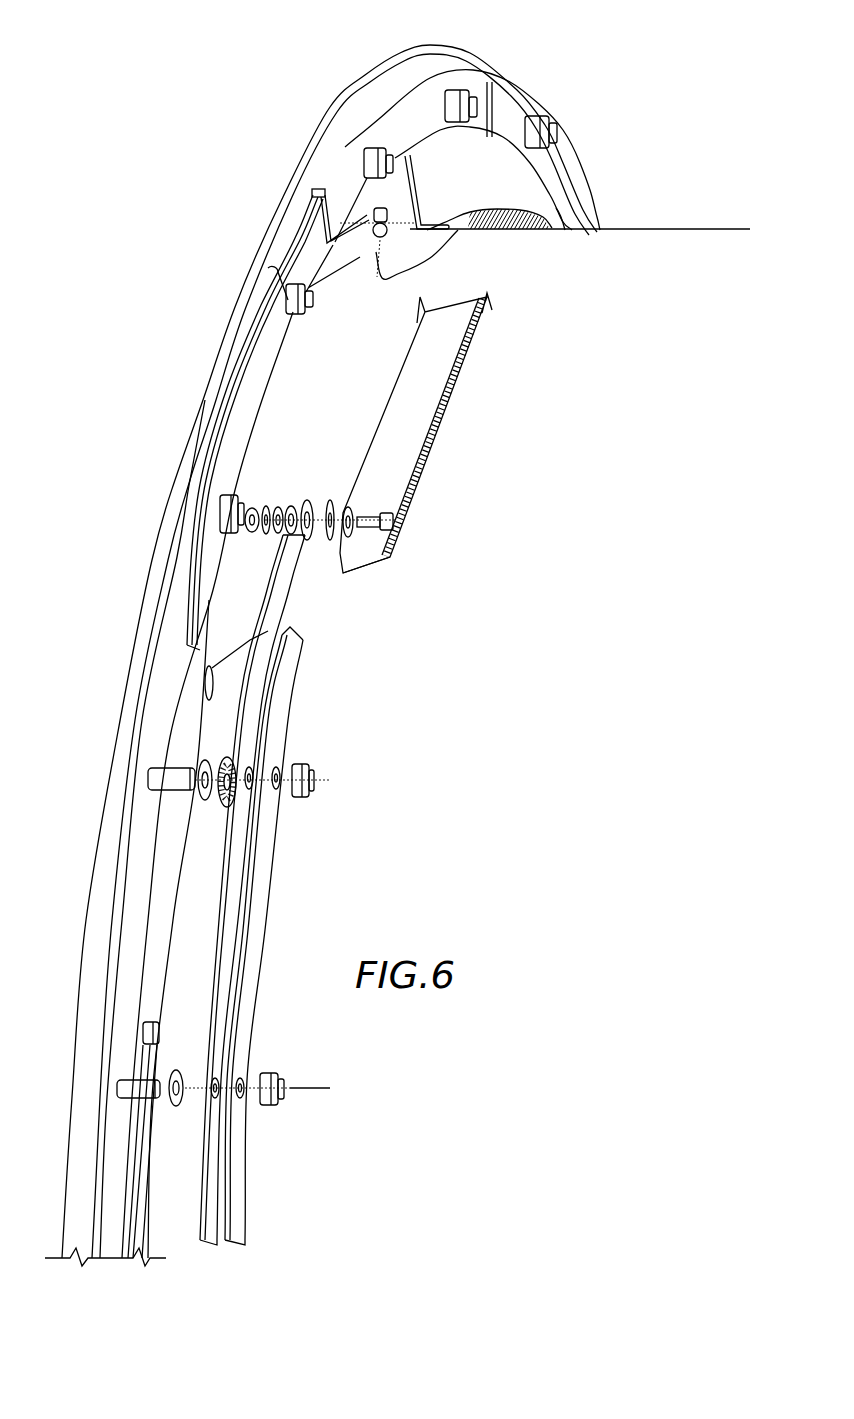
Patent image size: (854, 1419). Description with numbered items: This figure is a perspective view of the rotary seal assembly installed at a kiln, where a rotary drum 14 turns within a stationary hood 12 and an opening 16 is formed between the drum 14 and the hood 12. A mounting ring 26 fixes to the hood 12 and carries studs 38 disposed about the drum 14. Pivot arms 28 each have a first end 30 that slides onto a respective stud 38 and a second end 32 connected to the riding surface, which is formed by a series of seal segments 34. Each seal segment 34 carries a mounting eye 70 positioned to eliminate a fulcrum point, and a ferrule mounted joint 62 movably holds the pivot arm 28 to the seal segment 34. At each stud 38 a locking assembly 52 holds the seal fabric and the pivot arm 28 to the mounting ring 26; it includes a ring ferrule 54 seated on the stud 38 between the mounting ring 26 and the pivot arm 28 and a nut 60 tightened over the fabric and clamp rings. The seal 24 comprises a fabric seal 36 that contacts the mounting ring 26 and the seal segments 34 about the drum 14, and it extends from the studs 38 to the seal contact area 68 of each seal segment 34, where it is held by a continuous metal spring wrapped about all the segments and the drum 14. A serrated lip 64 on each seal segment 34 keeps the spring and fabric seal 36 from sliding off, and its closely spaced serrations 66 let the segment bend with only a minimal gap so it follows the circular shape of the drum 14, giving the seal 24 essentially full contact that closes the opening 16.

The hood 12 is at (242, 190).
The rotary drum 14 is at (692, 283).
The opening 16 is at (406, 204).
The seal 24 is at (557, 214).
The mounting ring 26 is at (337, 130).
The pivot arms 28 is at (270, 586).
The first end 30 is at (221, 750).
The second end 32 is at (312, 492).
The seal segments 34 is at (524, 232).
The fabric seal 36 is at (472, 185).
The studs 38 is at (162, 770).
The locking assembly 52 is at (318, 803).
The ring ferrule 54 is at (210, 805).
The nut 60 is at (302, 800).
The ferrule mounted joint 62 is at (349, 547).
The lip 64 is at (485, 239).
The serrations 66 is at (420, 432).
The seal contact area 68 is at (390, 496).
The mounting eye 70 is at (358, 237).